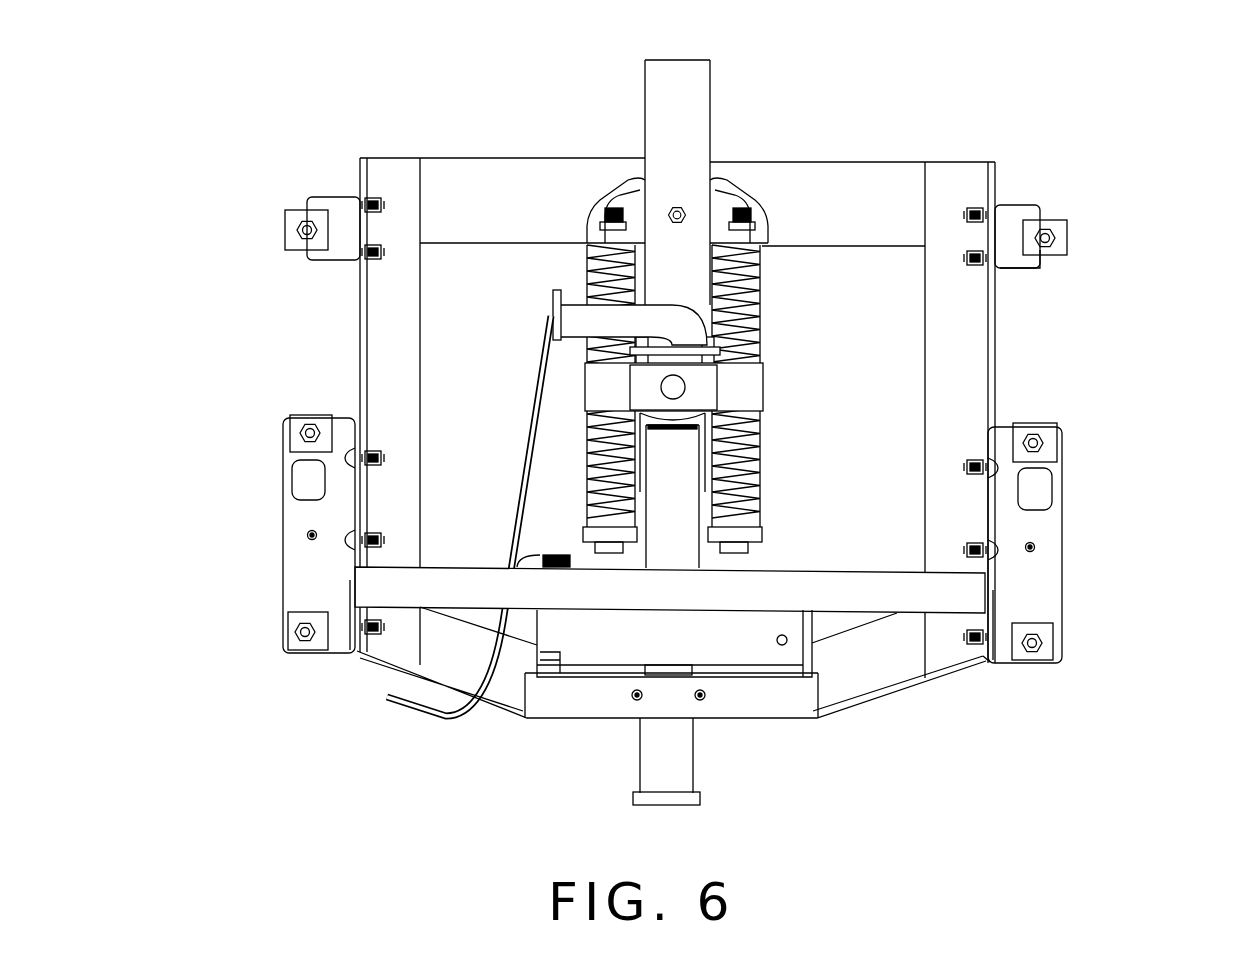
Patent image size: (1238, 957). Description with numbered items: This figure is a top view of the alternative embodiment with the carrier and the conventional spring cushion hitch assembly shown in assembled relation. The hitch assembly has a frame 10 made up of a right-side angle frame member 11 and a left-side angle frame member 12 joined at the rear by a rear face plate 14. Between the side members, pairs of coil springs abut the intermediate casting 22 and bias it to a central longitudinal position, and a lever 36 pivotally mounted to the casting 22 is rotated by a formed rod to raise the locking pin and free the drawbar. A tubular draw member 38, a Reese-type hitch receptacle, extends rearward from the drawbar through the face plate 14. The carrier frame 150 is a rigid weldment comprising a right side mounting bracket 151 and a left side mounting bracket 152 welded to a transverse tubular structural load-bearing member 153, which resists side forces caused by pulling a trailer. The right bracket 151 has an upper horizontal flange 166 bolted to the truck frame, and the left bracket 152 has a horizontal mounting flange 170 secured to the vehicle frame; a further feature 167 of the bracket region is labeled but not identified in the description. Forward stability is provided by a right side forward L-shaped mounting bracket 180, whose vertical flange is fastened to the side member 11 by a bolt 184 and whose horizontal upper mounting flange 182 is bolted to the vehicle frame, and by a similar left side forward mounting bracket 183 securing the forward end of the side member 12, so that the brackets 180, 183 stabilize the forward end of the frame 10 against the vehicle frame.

The frame 10 is at (499, 247).
The right-side angle frame member 11 is at (990, 348).
The left-side angle frame member 12 is at (358, 330).
The rear face plate 14 is at (940, 680).
The intermediate casting 22 is at (745, 386).
The lever 36 is at (571, 302).
The tubular draw member 38 is at (683, 750).
The carrier frame 150 is at (1100, 508).
The right side mounting bracket 151 is at (1060, 547).
The left side mounting bracket 152 is at (256, 534).
The transverse tubular structural load-bearing member 153 is at (803, 570).
The horizontal flange 166 is at (1050, 523).
The bracket lower nut plate 167 is at (1040, 603).
The horizontal mounting flange 170 is at (290, 520).
The right side forward L-shaped mounting bracket 180 is at (1100, 209).
The horizontal upper mounting flange 182 is at (1013, 262).
The left side forward mounting bracket 183 is at (340, 198).
The bolt 184 is at (1050, 238).